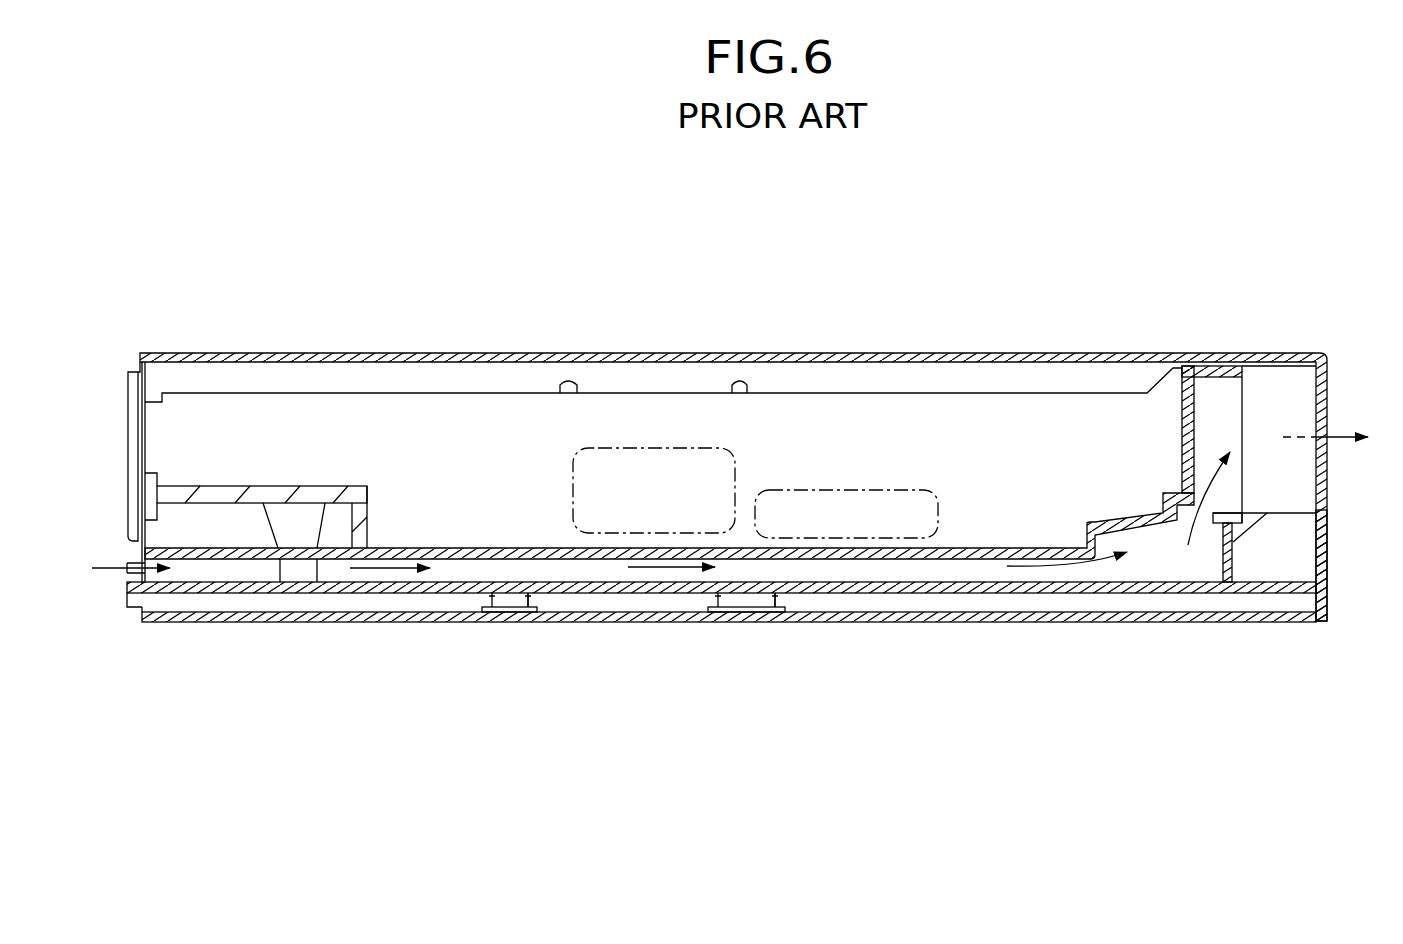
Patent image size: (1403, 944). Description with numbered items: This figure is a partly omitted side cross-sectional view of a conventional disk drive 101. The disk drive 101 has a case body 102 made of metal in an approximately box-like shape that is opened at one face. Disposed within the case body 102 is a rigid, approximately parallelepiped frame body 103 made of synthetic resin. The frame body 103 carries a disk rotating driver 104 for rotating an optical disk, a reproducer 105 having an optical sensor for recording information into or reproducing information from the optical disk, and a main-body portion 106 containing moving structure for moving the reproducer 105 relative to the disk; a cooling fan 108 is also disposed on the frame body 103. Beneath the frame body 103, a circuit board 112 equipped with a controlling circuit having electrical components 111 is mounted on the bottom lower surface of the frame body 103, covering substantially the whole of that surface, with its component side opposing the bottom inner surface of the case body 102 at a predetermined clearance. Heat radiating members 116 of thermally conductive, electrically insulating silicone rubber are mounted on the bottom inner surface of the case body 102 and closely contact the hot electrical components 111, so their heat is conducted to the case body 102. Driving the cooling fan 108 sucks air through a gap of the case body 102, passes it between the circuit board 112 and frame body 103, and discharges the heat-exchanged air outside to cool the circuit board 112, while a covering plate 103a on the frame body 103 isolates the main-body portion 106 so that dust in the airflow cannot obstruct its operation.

The disk drive 101 is at (873, 268).
The case body 102 is at (1045, 353).
The frame body 103 is at (298, 393).
The covering plate 103a is at (407, 547).
The disk rotating driver 104 is at (580, 463).
The reproducer 105 is at (940, 513).
The main-body portion 106 is at (676, 415).
The cooling fan 108 is at (1302, 393).
The electrical components 111 is at (530, 597).
The circuit board 112 is at (983, 593).
The heat radiating members 116 is at (503, 613).